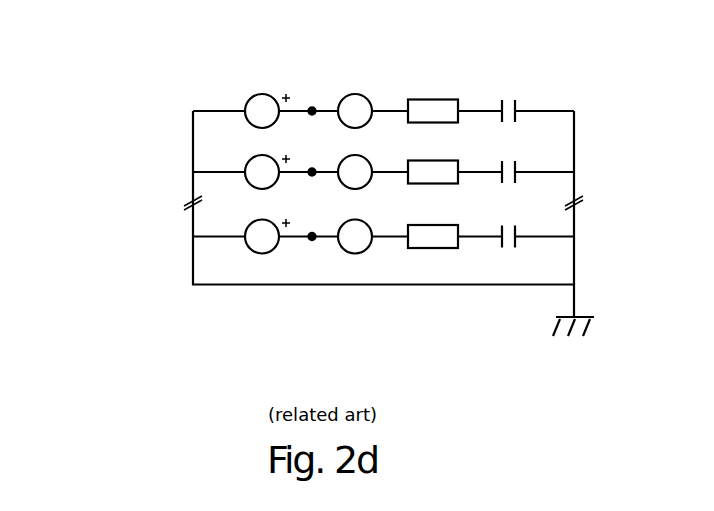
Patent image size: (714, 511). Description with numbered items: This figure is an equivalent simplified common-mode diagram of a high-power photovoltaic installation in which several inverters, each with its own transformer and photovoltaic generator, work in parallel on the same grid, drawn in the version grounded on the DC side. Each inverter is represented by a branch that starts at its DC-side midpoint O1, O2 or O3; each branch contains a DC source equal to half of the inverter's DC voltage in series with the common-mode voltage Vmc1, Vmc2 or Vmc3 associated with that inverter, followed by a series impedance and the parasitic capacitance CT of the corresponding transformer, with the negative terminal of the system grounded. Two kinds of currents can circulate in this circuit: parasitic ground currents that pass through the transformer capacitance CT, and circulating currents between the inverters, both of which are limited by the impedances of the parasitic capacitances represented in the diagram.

The common-mode voltage Vmc1 is at (356, 108).
The common-mode voltage Vmc2 is at (358, 175).
The common-mode voltage Vmc3 is at (356, 240).
The midpoint O1 is at (312, 107).
The midpoint O2 is at (312, 172).
The midpoint O3 is at (312, 236).
The parasitic capacitance of the transformer CT is at (512, 216).